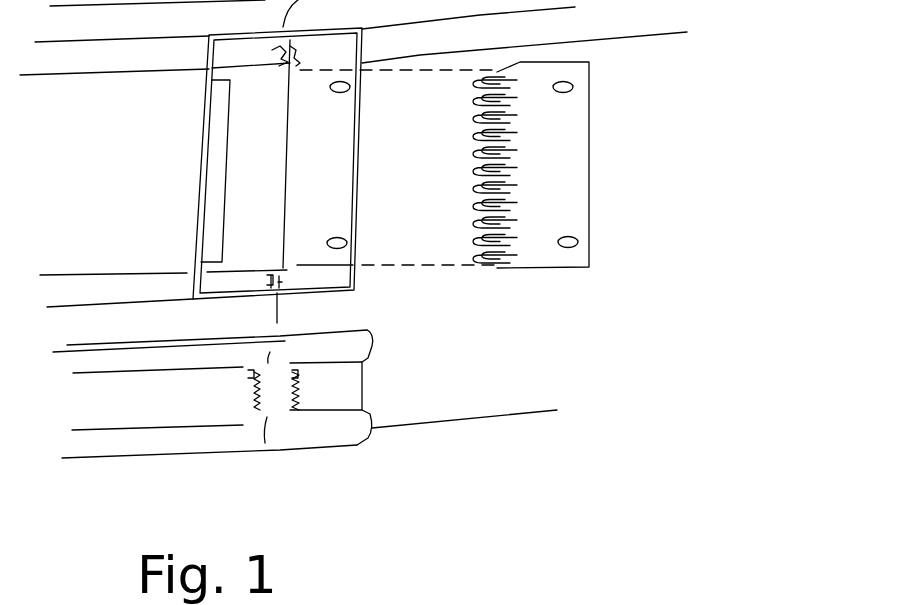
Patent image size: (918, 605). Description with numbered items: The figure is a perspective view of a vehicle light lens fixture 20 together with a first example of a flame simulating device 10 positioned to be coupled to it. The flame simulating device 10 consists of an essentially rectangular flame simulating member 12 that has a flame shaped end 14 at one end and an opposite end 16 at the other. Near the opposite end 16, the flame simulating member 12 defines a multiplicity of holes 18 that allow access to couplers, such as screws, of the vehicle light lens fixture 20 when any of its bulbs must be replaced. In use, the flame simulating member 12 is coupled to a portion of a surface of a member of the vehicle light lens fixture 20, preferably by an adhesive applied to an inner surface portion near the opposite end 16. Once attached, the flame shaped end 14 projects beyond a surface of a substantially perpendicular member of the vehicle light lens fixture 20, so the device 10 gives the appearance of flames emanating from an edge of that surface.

The flame simulating device 10 is at (594, 190).
The essentially rectangular flame simulating member 12 is at (535, 218).
The flame shaped end 14 is at (483, 220).
The opposite end 16 is at (590, 102).
The holes 18 is at (582, 249).
The vehicle light lens fixture 20 is at (253, 158).